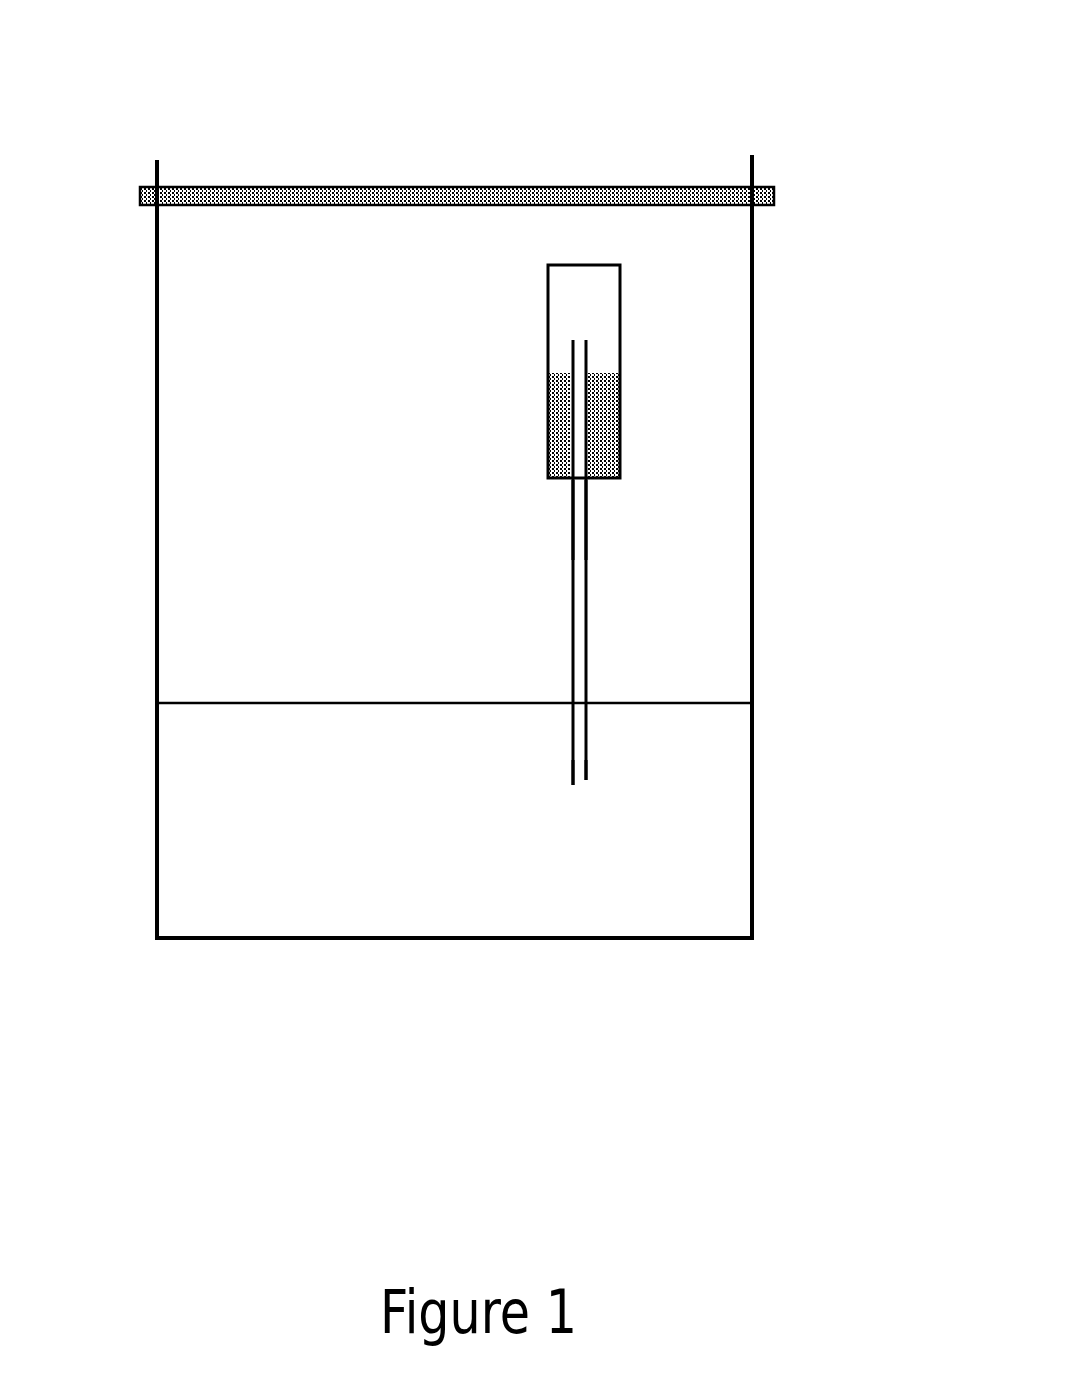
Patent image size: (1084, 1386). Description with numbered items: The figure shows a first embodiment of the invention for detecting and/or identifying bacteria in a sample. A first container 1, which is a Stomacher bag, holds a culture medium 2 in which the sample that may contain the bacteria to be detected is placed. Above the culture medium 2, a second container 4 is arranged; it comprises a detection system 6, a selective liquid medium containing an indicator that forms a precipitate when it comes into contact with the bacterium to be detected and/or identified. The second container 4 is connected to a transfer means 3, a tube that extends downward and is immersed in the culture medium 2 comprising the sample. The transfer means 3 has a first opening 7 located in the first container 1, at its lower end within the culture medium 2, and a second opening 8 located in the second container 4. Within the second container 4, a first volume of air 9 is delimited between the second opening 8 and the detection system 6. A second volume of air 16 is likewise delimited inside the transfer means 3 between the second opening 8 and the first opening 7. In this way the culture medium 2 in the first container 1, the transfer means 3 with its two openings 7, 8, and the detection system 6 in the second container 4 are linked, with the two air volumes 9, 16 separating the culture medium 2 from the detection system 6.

The first container 1 is at (157, 303).
The culture medium 2 is at (260, 878).
The transfer means 3 is at (587, 675).
The second container 4 is at (622, 317).
The detection system 6 is at (610, 455).
The first opening 7 is at (578, 792).
The second opening 8 is at (580, 335).
The first volume of air 9 is at (597, 287).
The second volume of air 16 is at (582, 537).